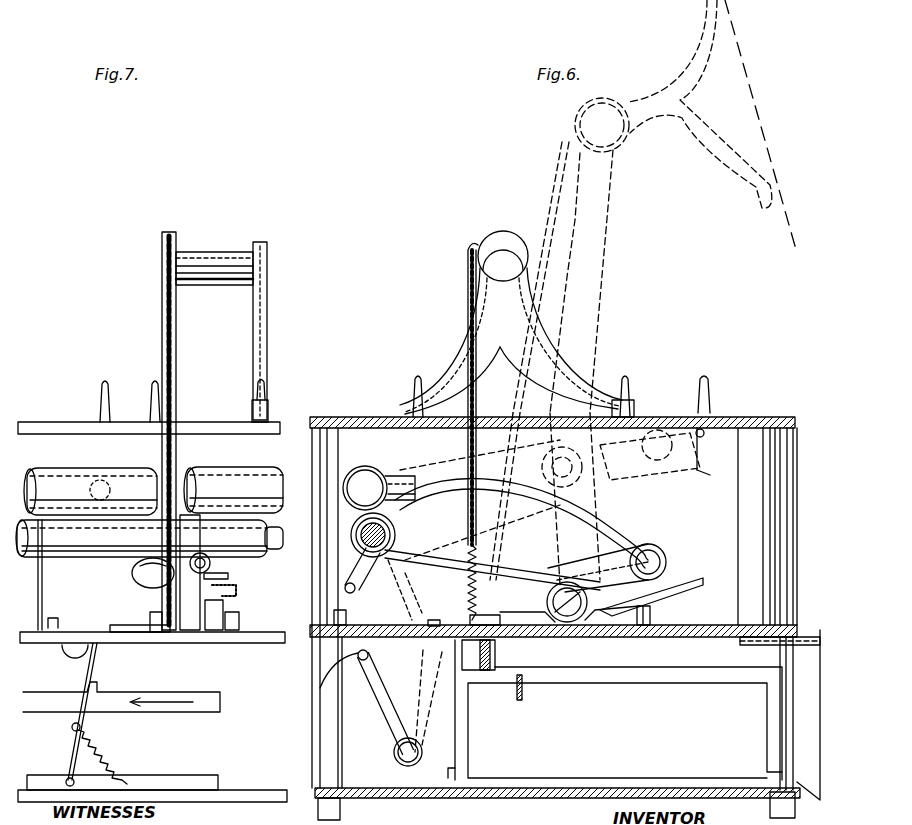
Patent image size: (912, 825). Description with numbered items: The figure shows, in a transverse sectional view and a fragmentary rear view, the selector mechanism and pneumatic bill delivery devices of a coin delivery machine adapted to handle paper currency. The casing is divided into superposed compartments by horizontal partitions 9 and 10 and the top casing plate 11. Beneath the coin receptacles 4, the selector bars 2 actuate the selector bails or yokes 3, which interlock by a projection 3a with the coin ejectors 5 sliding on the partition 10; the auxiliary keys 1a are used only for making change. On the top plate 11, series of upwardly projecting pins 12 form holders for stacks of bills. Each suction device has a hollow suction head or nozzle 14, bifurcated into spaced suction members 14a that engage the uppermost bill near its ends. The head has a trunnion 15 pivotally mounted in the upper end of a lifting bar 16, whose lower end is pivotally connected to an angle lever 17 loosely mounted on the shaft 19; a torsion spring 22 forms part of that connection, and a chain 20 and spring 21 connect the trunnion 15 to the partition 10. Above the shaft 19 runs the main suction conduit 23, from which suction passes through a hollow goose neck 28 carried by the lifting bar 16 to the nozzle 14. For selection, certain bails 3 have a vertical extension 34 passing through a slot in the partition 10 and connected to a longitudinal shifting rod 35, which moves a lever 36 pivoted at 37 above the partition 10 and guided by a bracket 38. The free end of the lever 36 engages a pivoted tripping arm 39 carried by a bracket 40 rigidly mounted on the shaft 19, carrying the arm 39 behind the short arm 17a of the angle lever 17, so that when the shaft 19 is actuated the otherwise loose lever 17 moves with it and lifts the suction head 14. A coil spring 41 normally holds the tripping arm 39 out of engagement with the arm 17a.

In FIG. 7, the auxiliary keys 1a is at (85, 545).
In FIG. 7, the selector bar 2 is at (214, 714).
In FIG. 6, the selector bar 2 is at (522, 690).
In FIG. 7, the selector bail or yoke 3 is at (70, 748).
In FIG. 6, the selector bail or yoke 3 is at (707, 675).
In FIG. 7, the projection 3a is at (93, 648).
In FIG. 6, the projection 3a is at (455, 660).
In FIG. 6, the coin receptacles 4 is at (562, 608).
In FIG. 7, the coin ejector 5 is at (95, 632).
In FIG. 6, the coin ejector 5 is at (601, 637).
In FIG. 6, the horizontal partition 9 is at (396, 755).
In FIG. 7, the horizontal partition 10 is at (283, 643).
In FIG. 6, the horizontal partition 10 is at (372, 660).
In FIG. 6, the top casing plate 11 is at (752, 416).
In FIG. 7, the pins 12 is at (111, 398).
In FIG. 6, the pins 12 is at (413, 392).
In FIG. 7, the suction head or nozzle 14 is at (267, 301).
In FIG. 6, the suction head or nozzle 14 is at (505, 313).
In FIG. 7, the spaced suction members 14a is at (252, 412).
In FIG. 6, the spaced suction members 14a is at (463, 378).
In FIG. 7, the trunnion 15 is at (212, 262).
In FIG. 6, the lifting bar 16 is at (560, 503).
In FIG. 6, the angle lever 17 is at (425, 552).
In FIG. 7, the short arm 17a is at (158, 632).
In FIG. 6, the short arm 17a is at (356, 591).
In FIG. 7, the shaft 19 is at (212, 566).
In FIG. 6, the shaft 19 is at (351, 540).
In FIG. 7, the chain 20 is at (176, 341).
In FIG. 6, the chain 20 is at (468, 294).
In FIG. 6, the spring 21 is at (468, 589).
In FIG. 6, the torsion spring 22 is at (582, 560).
In FIG. 7, the main suction conduit 23 is at (228, 470).
In FIG. 6, the main suction conduit 23 is at (370, 485).
In FIG. 7, the goose neck 28 is at (133, 575).
In FIG. 6, the goose neck 28 is at (660, 558).
In FIG. 7, the vertical extension 34 is at (56, 613).
In FIG. 6, the vertical extension 34 is at (495, 652).
In FIG. 7, the longitudinal shifting rod 35 is at (122, 628).
In FIG. 6, the longitudinal shifting rod 35 is at (490, 620).
In FIG. 7, the lever 36 is at (216, 632).
In FIG. 6, the lever 36 is at (422, 567).
In FIG. 6, the pivot 37 is at (668, 610).
In FIG. 7, the bracket 38 is at (243, 632).
In FIG. 6, the bracket 38 is at (433, 637).
In FIG. 7, the tripping arm 39 is at (193, 645).
In FIG. 7, the bracket 40 is at (229, 577).
In FIG. 7, the coil spring 41 is at (240, 593).